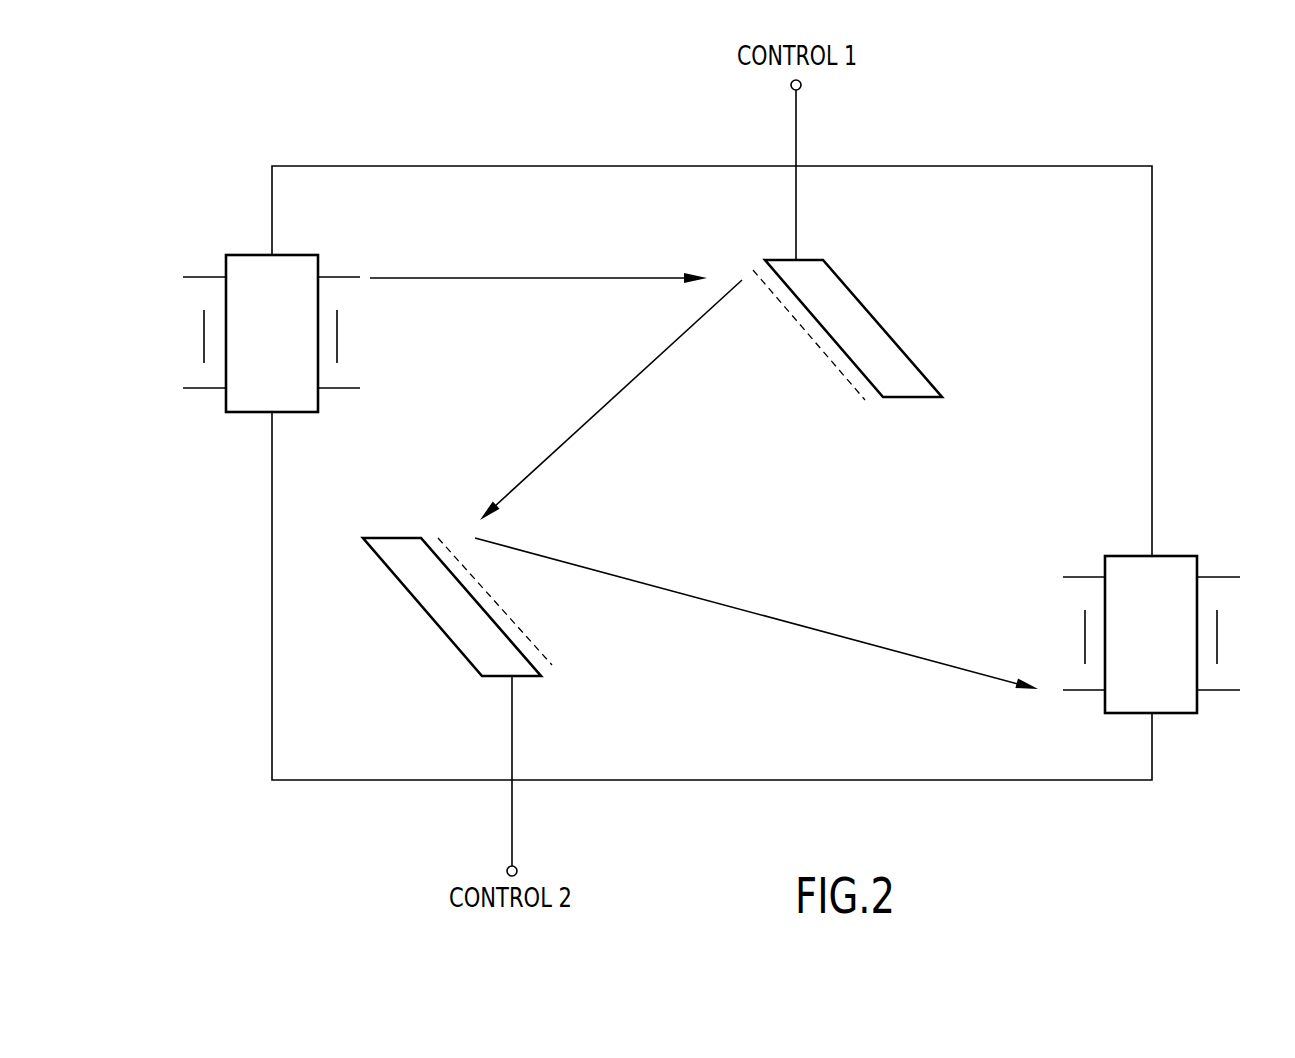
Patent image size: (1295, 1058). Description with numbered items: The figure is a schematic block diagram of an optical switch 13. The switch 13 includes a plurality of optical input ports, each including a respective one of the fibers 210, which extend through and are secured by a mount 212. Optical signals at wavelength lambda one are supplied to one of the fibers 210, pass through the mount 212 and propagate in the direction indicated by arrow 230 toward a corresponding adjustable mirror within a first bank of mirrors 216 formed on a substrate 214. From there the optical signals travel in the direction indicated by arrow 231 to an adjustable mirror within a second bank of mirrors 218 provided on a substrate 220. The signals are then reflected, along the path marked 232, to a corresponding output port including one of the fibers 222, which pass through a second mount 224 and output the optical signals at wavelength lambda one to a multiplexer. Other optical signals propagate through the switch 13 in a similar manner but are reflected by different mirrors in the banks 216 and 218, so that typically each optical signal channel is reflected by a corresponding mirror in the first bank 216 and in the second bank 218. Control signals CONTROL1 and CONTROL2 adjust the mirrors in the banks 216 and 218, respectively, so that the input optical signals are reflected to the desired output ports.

The switch 13 is at (700, 812).
The fibers 210 is at (190, 260).
The mount 212 is at (247, 255).
The substrate 214 is at (876, 313).
The first bank of mirrors 216 is at (796, 340).
The second bank of mirrors 218 is at (553, 636).
The substrate 220 is at (432, 623).
The fibers 222 is at (1070, 706).
The output collimator 224 is at (1168, 556).
The arrow 230 is at (520, 278).
The arrow 231 is at (563, 446).
The output beam 232 is at (830, 635).